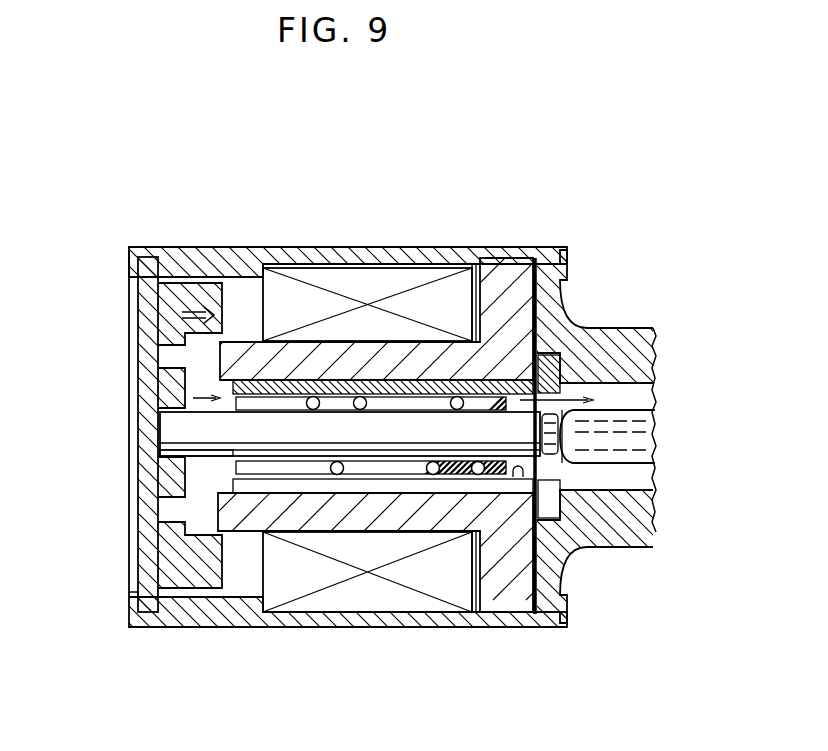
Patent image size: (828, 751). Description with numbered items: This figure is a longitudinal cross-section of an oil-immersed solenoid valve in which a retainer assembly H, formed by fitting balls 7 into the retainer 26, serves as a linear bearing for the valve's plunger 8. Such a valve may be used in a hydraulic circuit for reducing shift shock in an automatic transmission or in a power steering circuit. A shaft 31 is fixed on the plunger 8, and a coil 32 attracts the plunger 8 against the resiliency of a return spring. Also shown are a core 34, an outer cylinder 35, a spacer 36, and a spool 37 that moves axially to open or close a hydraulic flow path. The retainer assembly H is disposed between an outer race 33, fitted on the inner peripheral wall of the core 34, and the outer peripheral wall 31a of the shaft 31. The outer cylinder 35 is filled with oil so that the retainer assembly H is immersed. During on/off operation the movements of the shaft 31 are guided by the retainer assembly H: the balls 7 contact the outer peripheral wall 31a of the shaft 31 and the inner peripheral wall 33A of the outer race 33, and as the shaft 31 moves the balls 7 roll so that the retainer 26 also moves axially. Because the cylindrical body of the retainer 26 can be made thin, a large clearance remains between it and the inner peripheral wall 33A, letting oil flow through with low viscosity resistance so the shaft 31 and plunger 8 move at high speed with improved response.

The outer cylinder 35 is at (182, 258).
The coil 32 is at (410, 277).
The core 34 is at (512, 287).
The spacer 36 is at (583, 328).
The spool 37 is at (643, 432).
The inner peripheral wall of outer race 33A is at (522, 480).
The retainer 26 is at (402, 480).
The balls 7 is at (335, 472).
The outer race 33 is at (270, 481).
The shaft 31 is at (178, 428).
The outer peripheral wall of shaft 31a is at (233, 457).
The retainer assembly H is at (185, 532).
The plunger 8 is at (166, 576).